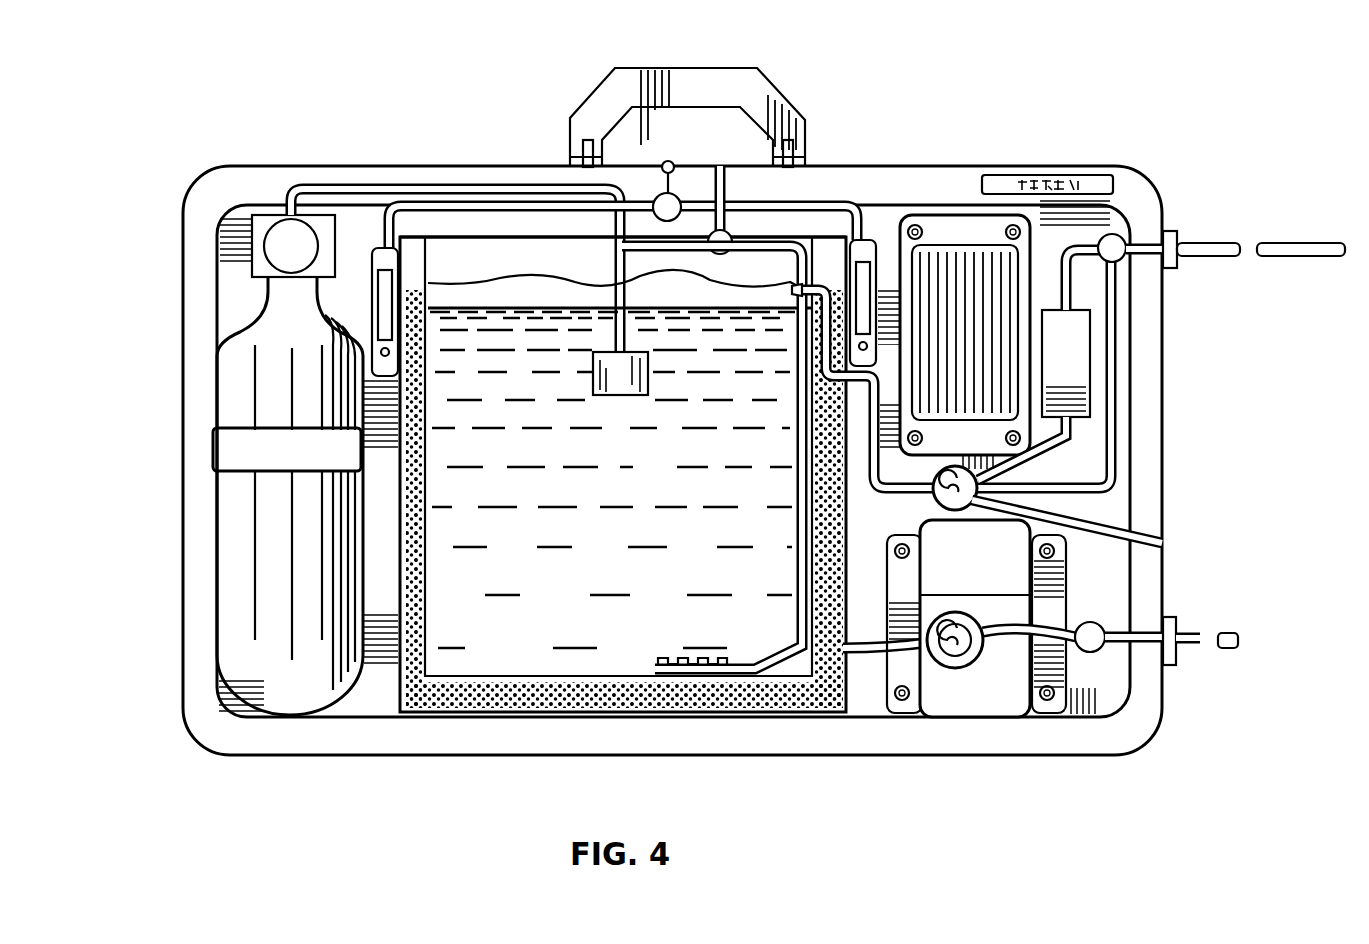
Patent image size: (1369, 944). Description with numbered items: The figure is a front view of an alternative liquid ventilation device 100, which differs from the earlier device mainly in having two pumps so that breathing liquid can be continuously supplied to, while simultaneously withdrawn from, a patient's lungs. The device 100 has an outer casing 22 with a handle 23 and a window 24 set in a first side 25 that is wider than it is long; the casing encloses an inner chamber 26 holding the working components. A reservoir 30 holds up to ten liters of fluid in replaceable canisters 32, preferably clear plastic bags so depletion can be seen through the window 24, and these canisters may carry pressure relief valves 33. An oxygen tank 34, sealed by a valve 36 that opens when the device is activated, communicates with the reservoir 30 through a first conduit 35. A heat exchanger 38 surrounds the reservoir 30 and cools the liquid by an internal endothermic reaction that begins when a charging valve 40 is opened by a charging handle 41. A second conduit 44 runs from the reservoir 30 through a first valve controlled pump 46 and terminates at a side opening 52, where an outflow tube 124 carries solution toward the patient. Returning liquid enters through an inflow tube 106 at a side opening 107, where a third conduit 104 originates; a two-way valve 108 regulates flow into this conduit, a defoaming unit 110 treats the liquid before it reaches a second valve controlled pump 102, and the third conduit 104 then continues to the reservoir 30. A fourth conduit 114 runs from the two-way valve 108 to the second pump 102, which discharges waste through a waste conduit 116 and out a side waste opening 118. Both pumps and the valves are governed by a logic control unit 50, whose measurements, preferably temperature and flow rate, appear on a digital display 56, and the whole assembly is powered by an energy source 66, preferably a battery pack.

The device 100 is at (457, 125).
The outer casing 22 is at (1165, 382).
The handle 23 is at (727, 80).
The window 24 is at (1128, 422).
The first side 25 is at (1148, 322).
The inner chamber 26 is at (893, 215).
The reservoir 30 is at (442, 673).
The replaceable canisters 32 is at (492, 640).
The pressure relief valves 33 is at (738, 242).
The oxygen tank 34 is at (245, 682).
The first conduit 35 is at (325, 187).
The valve 36 is at (290, 212).
The heat exchanger 38 is at (538, 690).
The charging valve 40 is at (682, 200).
The charging handle 41 is at (664, 162).
The second conduit 44 is at (786, 672).
The first valve controlled pump 46 is at (945, 670).
The logic control unit 50 is at (1008, 665).
The side opening 52 is at (1172, 618).
The digital display 56 is at (1090, 175).
The energy source 66 is at (965, 702).
The second valve controlled pump 102 is at (910, 523).
The third conduit 104 is at (1088, 247).
The inflow tube 106 is at (1222, 257).
The side opening 107 is at (1183, 234).
The two-way valve 108 is at (1110, 235).
The defoaming unit 110 is at (1085, 333).
The fourth conduit 114 is at (1122, 472).
The waste conduit 116 is at (1127, 527).
The side waste opening 118 is at (1160, 542).
The outflow tube 124 is at (1230, 650).